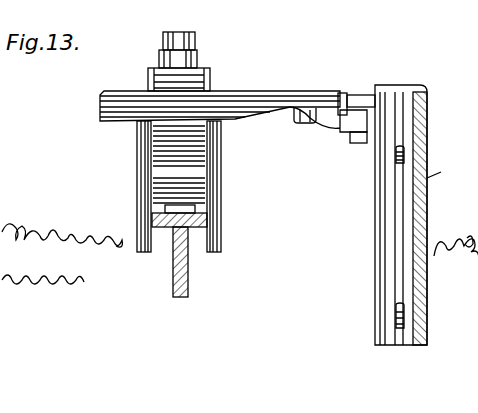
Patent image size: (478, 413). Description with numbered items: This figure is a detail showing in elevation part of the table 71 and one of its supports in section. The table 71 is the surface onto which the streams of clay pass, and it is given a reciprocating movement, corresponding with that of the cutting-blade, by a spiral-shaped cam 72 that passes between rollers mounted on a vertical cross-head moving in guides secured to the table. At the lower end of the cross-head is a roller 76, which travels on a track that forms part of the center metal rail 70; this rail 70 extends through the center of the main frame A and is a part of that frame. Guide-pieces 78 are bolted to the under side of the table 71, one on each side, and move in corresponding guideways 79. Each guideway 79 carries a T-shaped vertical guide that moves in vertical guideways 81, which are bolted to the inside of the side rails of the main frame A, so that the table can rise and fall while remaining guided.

The metal rail 70 is at (188, 268).
The table 71 is at (237, 98).
The spiral-shaped cam 72 is at (195, 42).
The roller 76 is at (207, 214).
The guide-pieces 78 is at (353, 126).
The guideways 79 is at (366, 139).
The vertical guideways 81 is at (388, 130).
The frame A is at (440, 176).